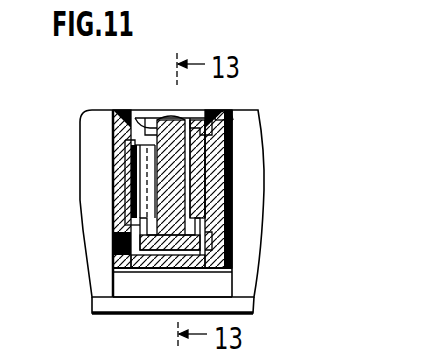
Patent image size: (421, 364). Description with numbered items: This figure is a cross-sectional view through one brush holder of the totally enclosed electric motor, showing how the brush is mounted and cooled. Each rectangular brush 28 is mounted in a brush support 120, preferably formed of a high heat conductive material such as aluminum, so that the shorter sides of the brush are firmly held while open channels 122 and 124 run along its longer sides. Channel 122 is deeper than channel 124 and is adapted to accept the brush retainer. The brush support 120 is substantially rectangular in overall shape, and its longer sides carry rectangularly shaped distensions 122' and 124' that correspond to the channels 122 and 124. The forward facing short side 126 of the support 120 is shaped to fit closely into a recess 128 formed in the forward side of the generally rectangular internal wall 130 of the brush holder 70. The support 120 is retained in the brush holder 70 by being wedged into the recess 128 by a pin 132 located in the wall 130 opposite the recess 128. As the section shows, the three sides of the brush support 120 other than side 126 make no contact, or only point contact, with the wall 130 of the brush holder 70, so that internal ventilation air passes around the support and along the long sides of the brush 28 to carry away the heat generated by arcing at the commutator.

The brush 28 is at (213, 165).
The brush holder 70 is at (226, 130).
The brush support 120 is at (215, 150).
The channel 122 is at (88, 184).
The distension 122' is at (95, 181).
The channel 124 is at (226, 203).
The distension 124' is at (262, 108).
The forward facing short side 126 is at (182, 113).
The recess 128 is at (155, 112).
The internal wall 130 is at (215, 238).
The pin 132 is at (178, 270).